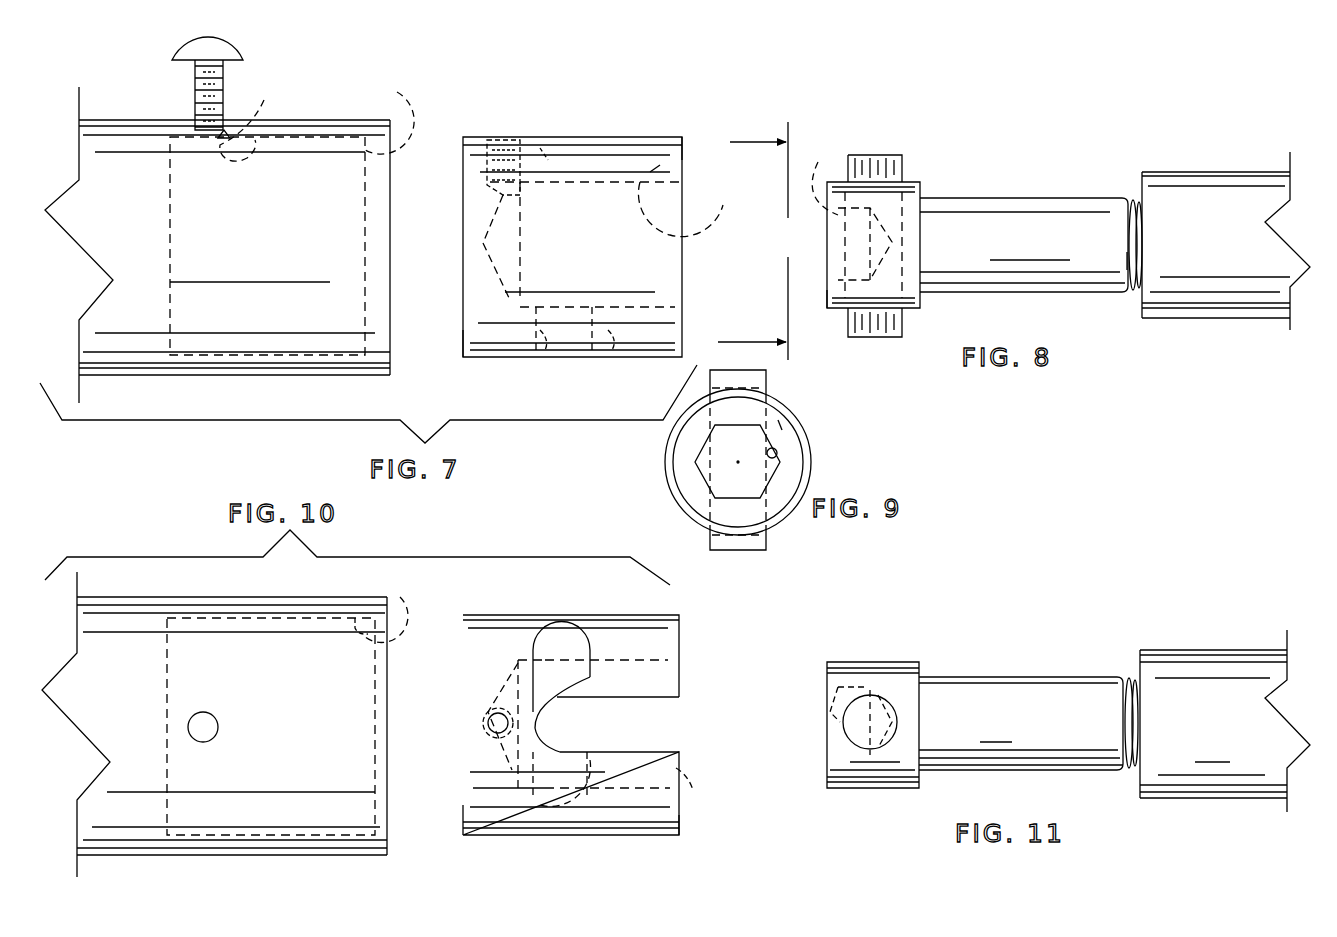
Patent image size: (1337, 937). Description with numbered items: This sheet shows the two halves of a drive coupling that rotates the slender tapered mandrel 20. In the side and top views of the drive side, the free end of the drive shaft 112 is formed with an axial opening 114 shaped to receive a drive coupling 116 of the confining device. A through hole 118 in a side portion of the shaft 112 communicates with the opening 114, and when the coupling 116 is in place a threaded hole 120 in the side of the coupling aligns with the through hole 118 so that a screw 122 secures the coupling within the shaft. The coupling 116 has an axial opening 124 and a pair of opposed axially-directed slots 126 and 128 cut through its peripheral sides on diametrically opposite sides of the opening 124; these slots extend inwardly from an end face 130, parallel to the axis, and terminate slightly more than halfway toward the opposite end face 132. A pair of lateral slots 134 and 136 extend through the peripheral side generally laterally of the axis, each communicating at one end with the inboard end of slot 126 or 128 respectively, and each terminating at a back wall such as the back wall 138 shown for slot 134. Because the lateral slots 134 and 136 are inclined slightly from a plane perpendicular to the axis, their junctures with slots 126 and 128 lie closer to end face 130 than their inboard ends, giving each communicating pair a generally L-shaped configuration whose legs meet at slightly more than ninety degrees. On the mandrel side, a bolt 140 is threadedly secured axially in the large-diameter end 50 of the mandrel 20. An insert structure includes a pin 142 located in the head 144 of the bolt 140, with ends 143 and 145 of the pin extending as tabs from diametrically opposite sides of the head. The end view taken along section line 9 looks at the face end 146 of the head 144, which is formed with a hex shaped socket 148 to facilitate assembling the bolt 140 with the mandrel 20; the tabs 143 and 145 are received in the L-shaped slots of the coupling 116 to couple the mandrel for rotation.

In FIG. 7, the section line 9 is at (742, 241).
In FIG. 8, the tapered mandrel 20 is at (1228, 170).
In FIG. 11, the tapered mandrel 20 is at (1236, 648).
In FIG. 8, the large-diameter end 50 is at (1170, 185).
In FIG. 11, the large-diameter end 50 is at (1165, 668).
In FIG. 7, the drive shaft 112 is at (122, 150).
In FIG. 10, the drive shaft 112 is at (117, 623).
In FIG. 7, the axial opening 114 is at (384, 117).
In FIG. 10, the axial opening 114 is at (381, 606).
In FIG. 7, the drive coupling 116 is at (617, 160).
In FIG. 10, the drive coupling 116 is at (487, 625).
In FIG. 7, the through hole 118 is at (266, 120).
In FIG. 10, the through hole 118 is at (208, 715).
In FIG. 7, the threaded hole 120 is at (503, 136).
In FIG. 10, the threaded hole 120 is at (495, 712).
In FIG. 7, the screw 122 is at (190, 56).
In FIG. 7, the axial opening 124 is at (718, 216).
In FIG. 10, the axial opening 124 is at (558, 675).
In FIG. 7, the axially-directed slot 126 is at (655, 170).
In FIG. 10, the axially-directed slot 126 is at (655, 697).
In FIG. 7, the axially-directed slot 128 is at (615, 340).
In FIG. 10, the axially-directed slot 128 is at (660, 752).
In FIG. 7, the end face 130 is at (688, 160).
In FIG. 10, the end face 130 is at (680, 823).
In FIG. 7, the end face 132 is at (463, 338).
In FIG. 10, the end face 132 is at (462, 812).
In FIG. 7, the lateral slot 134 is at (548, 150).
In FIG. 10, the lateral slot 134 is at (555, 700).
In FIG. 7, the lateral slot 136 is at (547, 340).
In FIG. 10, the lateral slot 136 is at (560, 828).
In FIG. 10, the back wall 138 is at (568, 650).
In FIG. 8, the bolt 140 is at (1045, 195).
In FIG. 9, the bolt 140 is at (662, 462).
In FIG. 11, the bolt 140 is at (1022, 675).
In FIG. 8, the pin 142 is at (872, 152).
In FIG. 9, the pin 142 is at (717, 556).
In FIG. 11, the pin 142 is at (850, 690).
In FIG. 8, the pin end 143 is at (898, 166).
In FIG. 9, the pin end 143 is at (762, 382).
In FIG. 11, the pin end 143 is at (883, 705).
In FIG. 8, the head 144 is at (905, 190).
In FIG. 9, the head 144 is at (668, 483).
In FIG. 8, the pin end 145 is at (897, 325).
In FIG. 9, the pin end 145 is at (733, 545).
In FIG. 8, the face end 146 is at (828, 300).
In FIG. 9, the face end 146 is at (778, 425).
In FIG. 11, the face end 146 is at (828, 772).
In FIG. 8, the hex shaped socket 148 is at (818, 173).
In FIG. 9, the hex shaped socket 148 is at (778, 453).
In FIG. 11, the hex shaped socket 148 is at (832, 710).